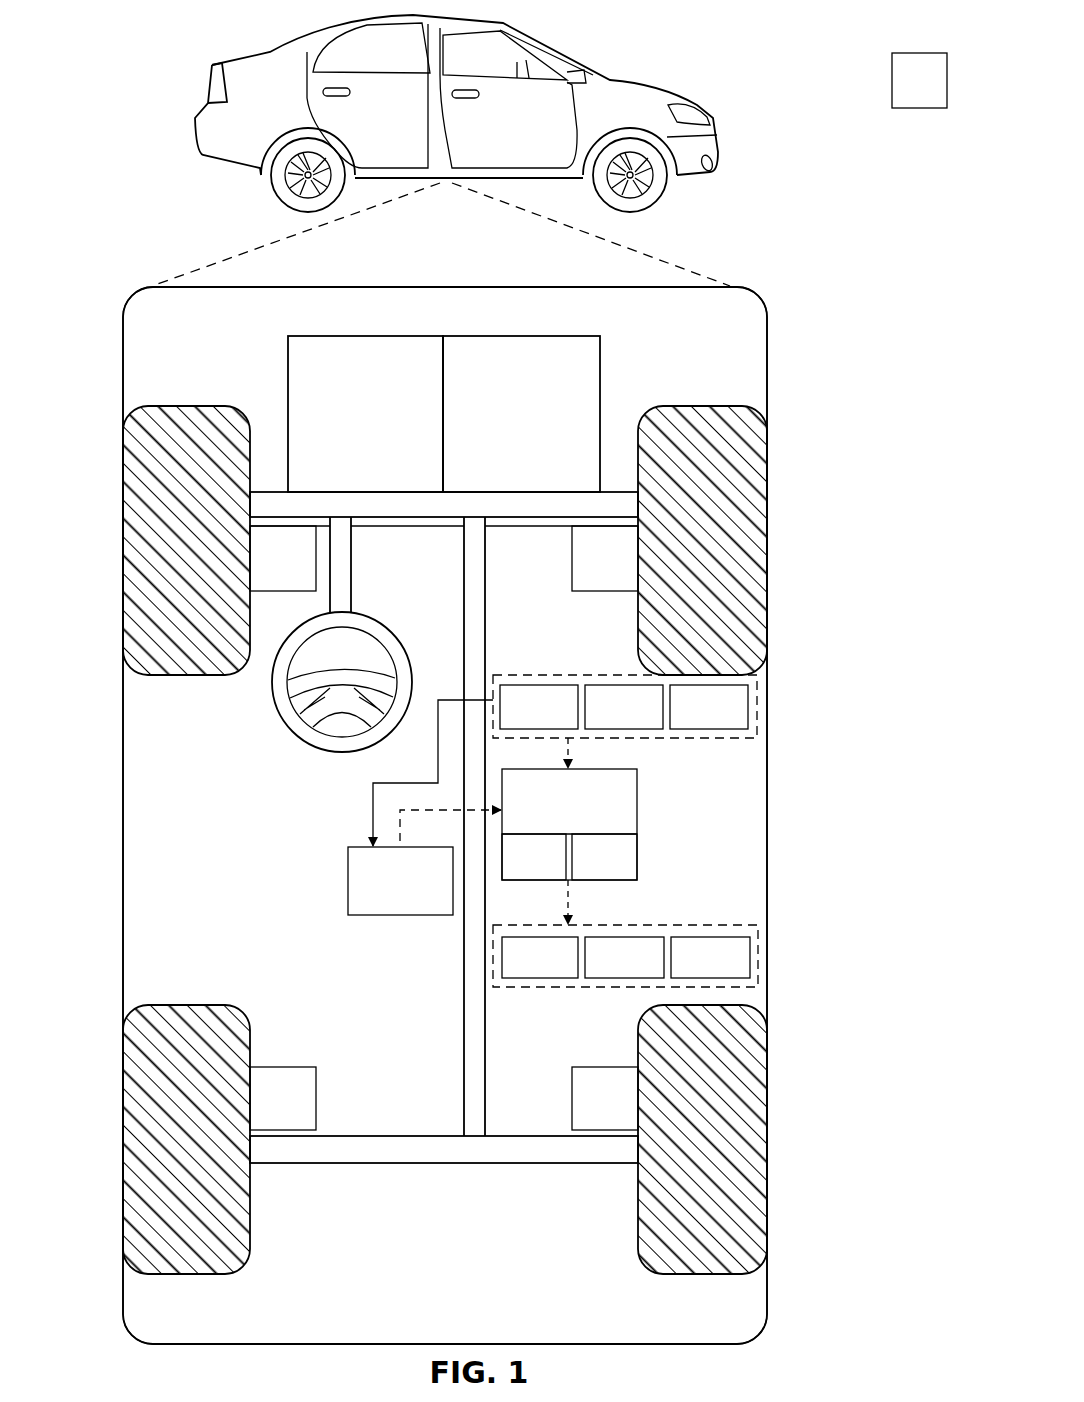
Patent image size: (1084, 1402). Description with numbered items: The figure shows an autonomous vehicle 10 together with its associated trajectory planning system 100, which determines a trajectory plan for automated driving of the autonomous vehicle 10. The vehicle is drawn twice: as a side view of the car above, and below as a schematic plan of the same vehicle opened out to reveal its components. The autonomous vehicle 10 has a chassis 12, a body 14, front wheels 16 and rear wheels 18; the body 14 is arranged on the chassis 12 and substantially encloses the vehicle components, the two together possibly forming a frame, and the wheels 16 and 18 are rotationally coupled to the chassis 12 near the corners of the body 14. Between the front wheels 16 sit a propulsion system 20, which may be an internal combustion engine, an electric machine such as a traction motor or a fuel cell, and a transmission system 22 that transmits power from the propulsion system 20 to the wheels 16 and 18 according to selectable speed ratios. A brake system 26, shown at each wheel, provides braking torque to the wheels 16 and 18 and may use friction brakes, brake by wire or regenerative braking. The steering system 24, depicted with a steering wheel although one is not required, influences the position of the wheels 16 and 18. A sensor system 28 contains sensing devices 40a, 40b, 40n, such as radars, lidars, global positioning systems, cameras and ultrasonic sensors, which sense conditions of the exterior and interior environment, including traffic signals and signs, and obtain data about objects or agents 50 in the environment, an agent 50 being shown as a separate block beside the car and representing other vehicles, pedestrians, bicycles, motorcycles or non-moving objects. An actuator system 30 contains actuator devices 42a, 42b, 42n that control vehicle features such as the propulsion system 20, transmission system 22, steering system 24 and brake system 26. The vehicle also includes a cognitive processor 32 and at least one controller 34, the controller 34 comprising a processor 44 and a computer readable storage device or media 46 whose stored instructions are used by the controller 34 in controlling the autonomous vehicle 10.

The autonomous vehicle 10 is at (205, 98).
The trajectory planning system 100 is at (774, 286).
The agents 50 is at (920, 52).
The chassis 12 is at (463, 1000).
The body 14 is at (122, 778).
The front wheels 16 is at (185, 405).
The rear wheels 18 is at (186, 1275).
The propulsion system 20 is at (351, 431).
The transmission system 22 is at (506, 431).
The steering system 24 is at (361, 586).
The brake system 26 is at (270, 574).
The sensor system 28 is at (583, 673).
The actuator system 30 is at (587, 989).
The cognitive processor 32 is at (386, 897).
The controller 34 is at (555, 819).
The sensing device 40a is at (518, 722).
The sensing device 40b is at (603, 722).
The sensing device 40n is at (688, 722).
The actuator device 42a is at (518, 972).
The actuator device 42b is at (603, 972).
The actuator device 42n is at (688, 972).
The processor 44 is at (520, 873).
The computer readable storage device or media 46 is at (590, 873).